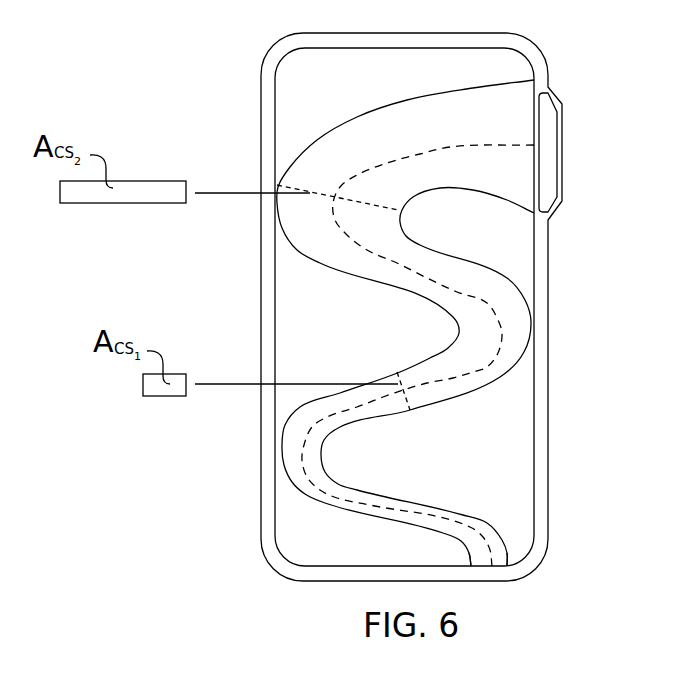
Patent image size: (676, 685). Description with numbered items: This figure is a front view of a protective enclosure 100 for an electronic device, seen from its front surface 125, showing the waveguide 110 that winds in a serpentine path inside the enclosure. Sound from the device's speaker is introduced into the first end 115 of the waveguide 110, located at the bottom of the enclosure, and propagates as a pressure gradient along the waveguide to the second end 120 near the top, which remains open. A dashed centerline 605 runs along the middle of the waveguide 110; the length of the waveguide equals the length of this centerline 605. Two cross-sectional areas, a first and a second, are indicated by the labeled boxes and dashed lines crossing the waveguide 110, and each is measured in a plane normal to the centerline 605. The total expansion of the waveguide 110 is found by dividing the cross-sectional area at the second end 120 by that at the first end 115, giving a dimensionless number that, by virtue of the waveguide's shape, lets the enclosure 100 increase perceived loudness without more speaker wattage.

The protective enclosure 100 is at (236, 35).
The front surface 125 is at (486, 41).
The second end of the waveguide 120 is at (547, 172).
The waveguide 110 is at (510, 331).
The centerline of the waveguide 605 is at (452, 147).
The first end of the waveguide 115 is at (495, 562).